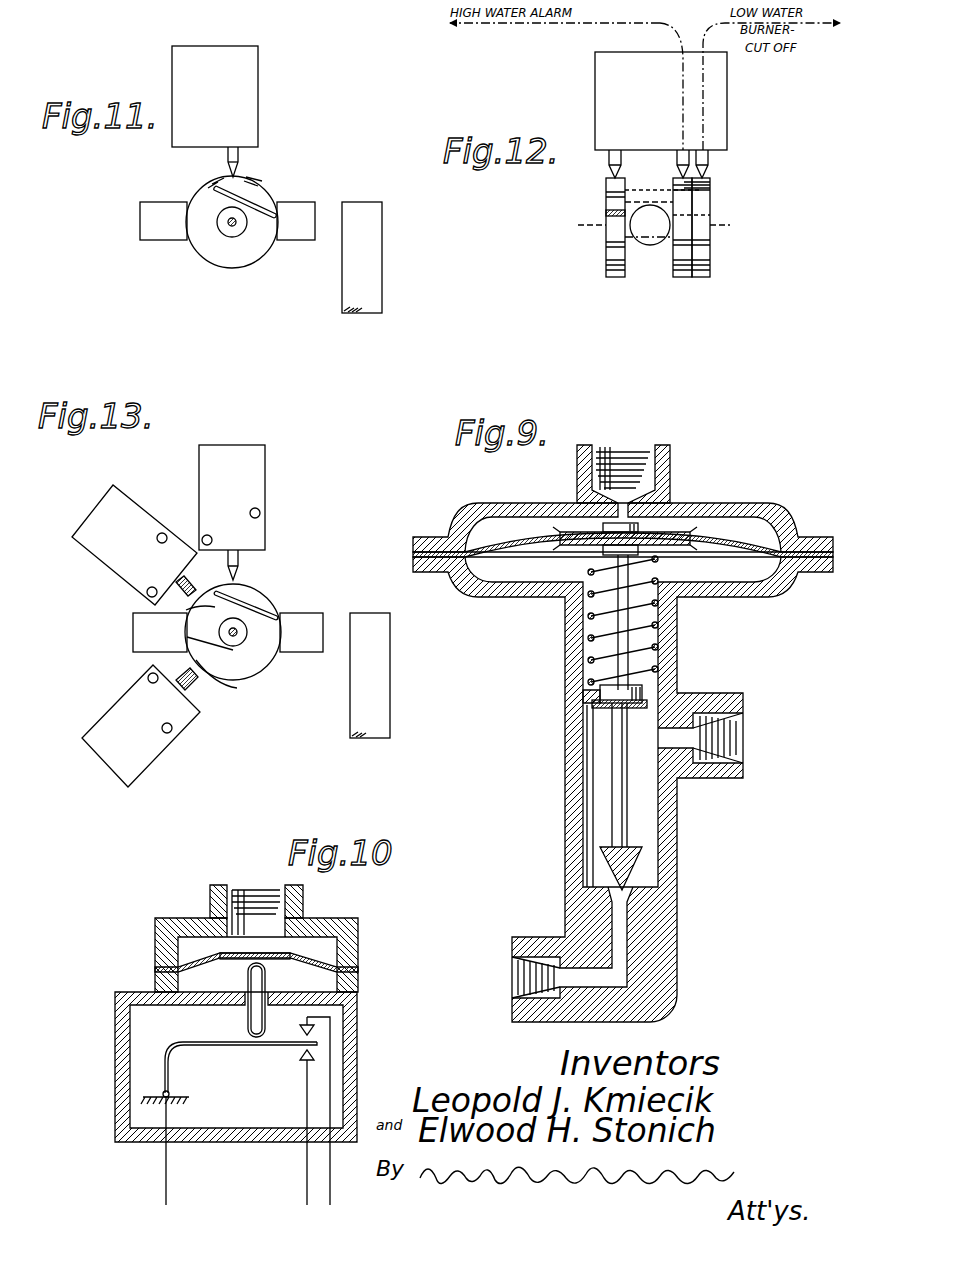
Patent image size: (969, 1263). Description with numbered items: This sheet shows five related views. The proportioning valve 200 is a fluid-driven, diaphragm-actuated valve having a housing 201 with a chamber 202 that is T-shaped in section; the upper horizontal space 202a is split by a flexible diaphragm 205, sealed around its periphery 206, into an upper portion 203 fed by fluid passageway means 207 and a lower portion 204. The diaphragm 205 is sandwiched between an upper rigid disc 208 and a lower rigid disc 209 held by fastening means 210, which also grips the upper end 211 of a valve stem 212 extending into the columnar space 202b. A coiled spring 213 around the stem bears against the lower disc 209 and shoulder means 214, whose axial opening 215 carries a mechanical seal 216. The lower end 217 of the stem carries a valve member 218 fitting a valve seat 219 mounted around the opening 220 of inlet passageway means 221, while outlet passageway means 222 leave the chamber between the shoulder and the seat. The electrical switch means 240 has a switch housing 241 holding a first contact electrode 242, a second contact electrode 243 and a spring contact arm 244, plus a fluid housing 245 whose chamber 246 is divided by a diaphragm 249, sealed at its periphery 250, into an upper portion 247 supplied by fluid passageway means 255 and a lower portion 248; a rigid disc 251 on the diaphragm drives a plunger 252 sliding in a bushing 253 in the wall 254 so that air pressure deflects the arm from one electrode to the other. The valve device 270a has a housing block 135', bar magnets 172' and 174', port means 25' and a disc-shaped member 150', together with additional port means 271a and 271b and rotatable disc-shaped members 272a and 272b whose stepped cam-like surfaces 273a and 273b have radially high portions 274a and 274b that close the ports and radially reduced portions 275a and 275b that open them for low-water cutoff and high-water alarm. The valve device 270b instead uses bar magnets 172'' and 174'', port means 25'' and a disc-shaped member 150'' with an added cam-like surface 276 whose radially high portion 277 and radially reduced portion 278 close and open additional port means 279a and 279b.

In FIG. 11, the valve device 270a is at (281, 112).
In FIG. 12, the valve device 270a is at (590, 110).
In FIG. 11, the port means 25' is at (278, 146).
In FIG. 12, the port means 25' is at (577, 145).
In FIG. 11, the radially reduced portion 275b is at (214, 182).
In FIG. 12, the radially reduced portion 275b is at (662, 179).
In FIG. 11, the radially reduced portion 275a is at (262, 184).
In FIG. 12, the radially reduced portion 275a is at (710, 186).
In FIG. 11, the bar magnet 172' is at (201, 217).
In FIG. 12, the bar magnet 172' is at (604, 254).
In FIG. 11, the generally disc-shaped member 150' is at (228, 242).
In FIG. 12, the generally disc-shaped member 150' is at (580, 244).
In FIG. 11, the bar magnet 174' is at (337, 257).
In FIG. 12, the additional port means 271b is at (674, 158).
In FIG. 12, the radially high portion 274b is at (687, 180).
In FIG. 12, the additional port means 271a is at (718, 164).
In FIG. 12, the radially high portion 274a is at (710, 175).
In FIG. 12, the stepped cam-like surface 273a is at (703, 203).
In FIG. 12, the stepped cam-like surface 273b is at (680, 202).
In FIG. 12, the housing block 135' is at (641, 257).
In FIG. 12, the rotatable generally disc-shaped member 272b is at (680, 279).
In FIG. 12, the rotatable generally disc-shaped member 272a is at (703, 282).
In FIG. 13, the additional port means 279a is at (195, 580).
In FIG. 13, the port means 25'' is at (261, 512).
In FIG. 13, the radially high portion 277 is at (197, 607).
In FIG. 13, the peripheral stepped cam-like surface 276 is at (183, 610).
In FIG. 13, the bar magnet 172'' is at (185, 638).
In FIG. 13, the radially reduced portion 278 is at (190, 637).
In FIG. 13, the rotatable generally disc-shaped member 150'' is at (262, 647).
In FIG. 13, the additional port means 279b is at (198, 684).
In FIG. 13, the bar magnet 174'' is at (337, 675).
In FIG. 13, the valve device 270b is at (265, 715).
In FIG. 9, the fluid passageway means 207 is at (623, 443).
In FIG. 9, the upper portion 203 is at (487, 517).
In FIG. 9, the fluid-tight flexible diaphragm 205 is at (508, 538).
In FIG. 9, the periphery 206 is at (433, 521).
In FIG. 9, the upper rigid disc 208 is at (690, 537).
In FIG. 9, the lower portion 204 is at (546, 574).
In FIG. 9, the fluid-tight fastening means 210 is at (637, 553).
In FIG. 9, the lower rigid disc 209 is at (690, 548).
In FIG. 9, the upper generally horizontal space 202a is at (547, 572).
In FIG. 9, the upper end 211 is at (632, 582).
In FIG. 9, the lower generally columnar space 202b is at (587, 654).
In FIG. 9, the valve stem 212 is at (630, 639).
In FIG. 9, the coiled spring 213 is at (653, 654).
In FIG. 9, the shoulder means 214 is at (587, 696).
In FIG. 9, the mechanical seal 216 is at (642, 688).
In FIG. 9, the proportioning valve 200 is at (612, 708).
In FIG. 9, the axial opening 215 is at (597, 704).
In FIG. 9, the housing 201 is at (566, 773).
In FIG. 9, the chamber 202 is at (590, 790).
In FIG. 9, the lower end 217 is at (622, 805).
In FIG. 9, the valve member 218 is at (637, 855).
In FIG. 9, the opening 220 is at (622, 895).
In FIG. 9, the valve seat 219 is at (583, 896).
In FIG. 9, the inlet passageway means 221 is at (512, 979).
In FIG. 9, the outlet passageway means 222 is at (746, 737).
In FIG. 10, the electrical switch means 240 is at (125, 895).
In FIG. 10, the fluid housing 245 is at (210, 887).
In FIG. 10, the fluid passageway means 255 is at (256, 885).
In FIG. 10, the upper portion 247 is at (192, 942).
In FIG. 10, the fluid-tight flexible diaphragm 249 is at (303, 953).
In FIG. 10, the periphery 250 is at (157, 967).
In FIG. 10, the chamber 246 is at (183, 974).
In FIG. 10, the lower portion 248 is at (232, 991).
In FIG. 10, the rigid disc 251 is at (279, 966).
In FIG. 10, the wall 254 is at (175, 1003).
In FIG. 10, the mechanical bushing 253 is at (237, 999).
In FIG. 10, the first contact electrode 242 is at (317, 1031).
In FIG. 10, the second contact electrode 243 is at (317, 1058).
In FIG. 10, the switch housing 241 is at (115, 1075).
In FIG. 10, the spring contact arm 244 is at (196, 1046).
In FIG. 10, the plunger 252 is at (262, 1020).